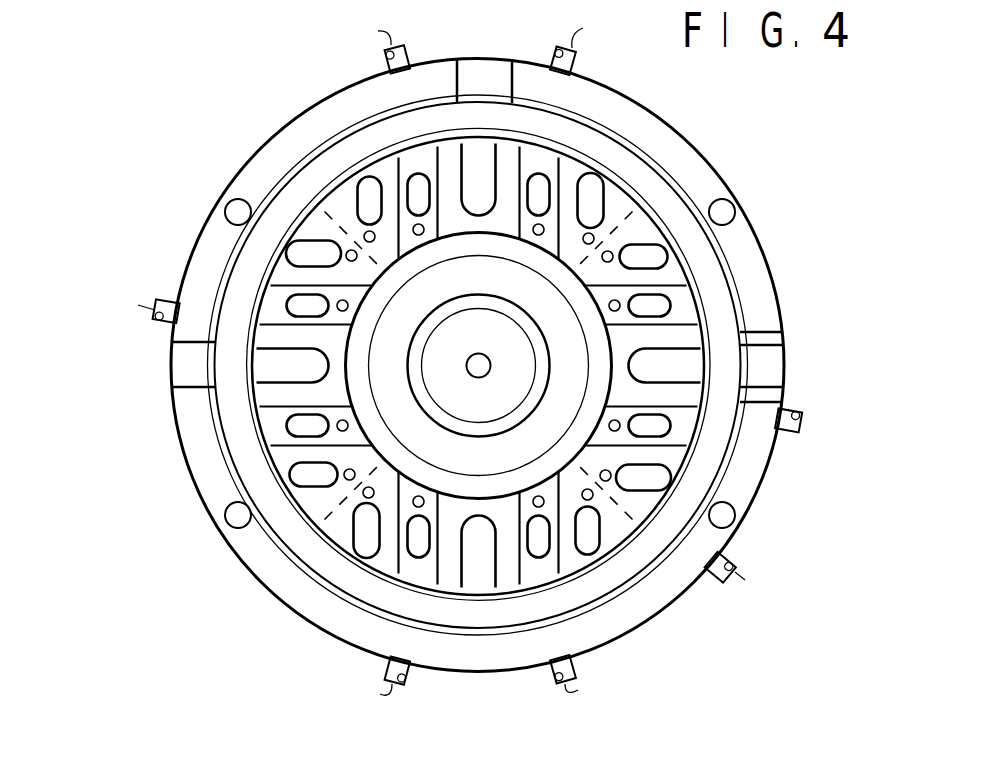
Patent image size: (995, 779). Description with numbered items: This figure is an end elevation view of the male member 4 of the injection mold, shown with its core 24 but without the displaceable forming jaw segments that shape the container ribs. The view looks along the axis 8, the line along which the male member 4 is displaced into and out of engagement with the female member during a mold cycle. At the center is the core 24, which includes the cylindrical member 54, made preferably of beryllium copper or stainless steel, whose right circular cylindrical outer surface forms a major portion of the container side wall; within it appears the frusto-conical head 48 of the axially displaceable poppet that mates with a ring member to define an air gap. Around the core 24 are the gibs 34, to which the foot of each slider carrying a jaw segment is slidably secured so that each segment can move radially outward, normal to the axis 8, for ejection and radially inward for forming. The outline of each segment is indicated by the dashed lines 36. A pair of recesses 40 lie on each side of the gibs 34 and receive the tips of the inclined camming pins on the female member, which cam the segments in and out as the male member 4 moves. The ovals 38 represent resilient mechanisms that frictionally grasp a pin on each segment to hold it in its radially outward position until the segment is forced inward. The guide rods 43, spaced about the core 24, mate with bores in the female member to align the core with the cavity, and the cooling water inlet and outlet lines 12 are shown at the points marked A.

The male member 4 is at (250, 114).
The axis 8 is at (491, 363).
The cooling water inlet and outlet lines 12 is at (795, 408).
The core 24 is at (346, 292).
The gib 34 is at (275, 392).
The dashed lines 36 is at (335, 222).
The ovals 38 is at (365, 175).
The recesses 40 is at (420, 185).
The guide rods 43 is at (244, 200).
The frusto-conical head 48 is at (404, 380).
The cylindrical member 54 is at (350, 348).